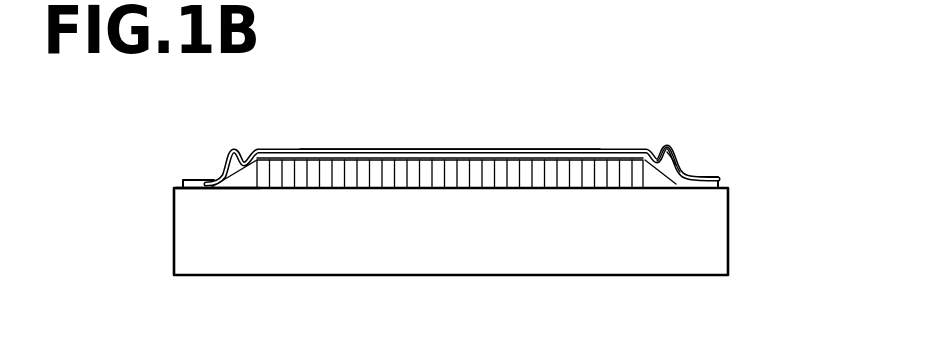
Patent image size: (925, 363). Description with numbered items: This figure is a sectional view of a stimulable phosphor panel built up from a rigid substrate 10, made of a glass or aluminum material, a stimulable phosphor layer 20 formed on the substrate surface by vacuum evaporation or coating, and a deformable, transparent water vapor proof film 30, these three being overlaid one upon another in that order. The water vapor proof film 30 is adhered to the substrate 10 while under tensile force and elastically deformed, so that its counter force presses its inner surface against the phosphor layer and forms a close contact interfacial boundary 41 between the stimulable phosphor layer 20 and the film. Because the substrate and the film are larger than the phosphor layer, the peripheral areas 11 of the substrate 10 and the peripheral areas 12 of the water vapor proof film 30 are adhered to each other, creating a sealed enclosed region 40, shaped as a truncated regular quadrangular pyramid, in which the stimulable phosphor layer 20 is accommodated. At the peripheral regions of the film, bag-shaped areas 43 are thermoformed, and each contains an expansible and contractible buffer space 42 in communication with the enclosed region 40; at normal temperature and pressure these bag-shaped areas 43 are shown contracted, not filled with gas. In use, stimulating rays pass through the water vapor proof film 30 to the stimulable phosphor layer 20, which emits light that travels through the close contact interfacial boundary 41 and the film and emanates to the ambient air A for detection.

The ambient air A is at (724, 51).
The substrate 10 is at (715, 224).
The peripheral areas of the substrate 11 is at (200, 181).
The peripheral areas of the water vapor proof film 12 is at (192, 196).
The stimulable phosphor layer 20 is at (580, 158).
The water vapor proof film 30 is at (513, 154).
The enclosed region 40 is at (250, 151).
The close contact interfacial boundary 41 is at (425, 154).
The buffer spaces 42 is at (678, 160).
The bag-shaped areas 43 is at (670, 145).